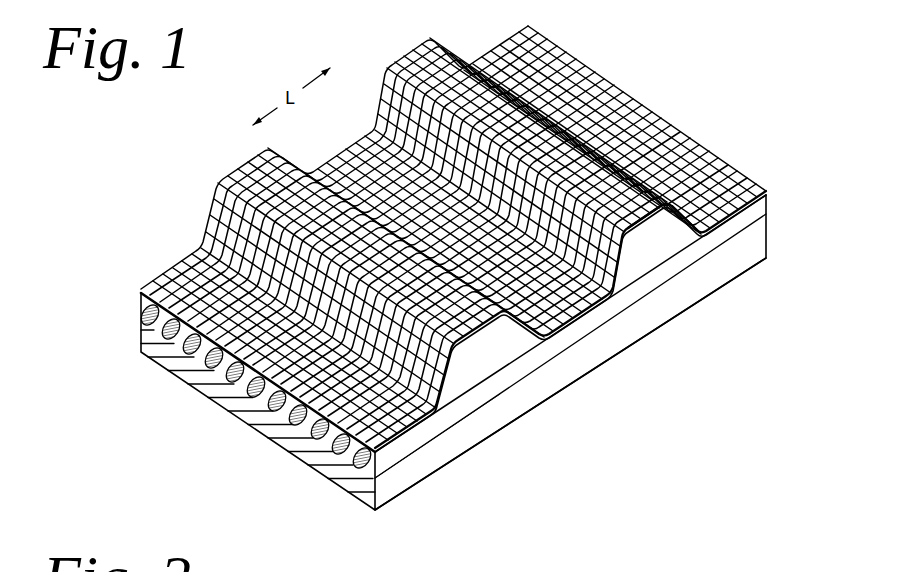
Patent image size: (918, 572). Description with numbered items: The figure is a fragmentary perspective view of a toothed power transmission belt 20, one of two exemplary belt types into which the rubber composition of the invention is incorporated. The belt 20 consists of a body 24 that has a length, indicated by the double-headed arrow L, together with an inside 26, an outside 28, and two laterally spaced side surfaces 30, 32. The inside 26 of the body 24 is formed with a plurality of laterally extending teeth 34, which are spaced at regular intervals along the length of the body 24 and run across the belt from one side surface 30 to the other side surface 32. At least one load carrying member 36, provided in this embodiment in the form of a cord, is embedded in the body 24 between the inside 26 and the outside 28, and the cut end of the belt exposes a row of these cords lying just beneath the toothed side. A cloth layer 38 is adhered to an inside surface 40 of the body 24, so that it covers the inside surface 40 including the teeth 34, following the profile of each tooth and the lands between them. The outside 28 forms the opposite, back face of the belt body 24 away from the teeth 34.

The toothed power transmission belt 20 is at (736, 110).
The body 24 is at (665, 316).
The inside 26 is at (646, 214).
The outside 28 is at (597, 377).
The side surface 30 is at (142, 338).
The side surface 32 is at (393, 482).
The teeth 34 is at (492, 367).
The load carrying member 36 is at (430, 428).
The cloth layer 38 is at (141, 293).
The inside surface 40 is at (696, 234).